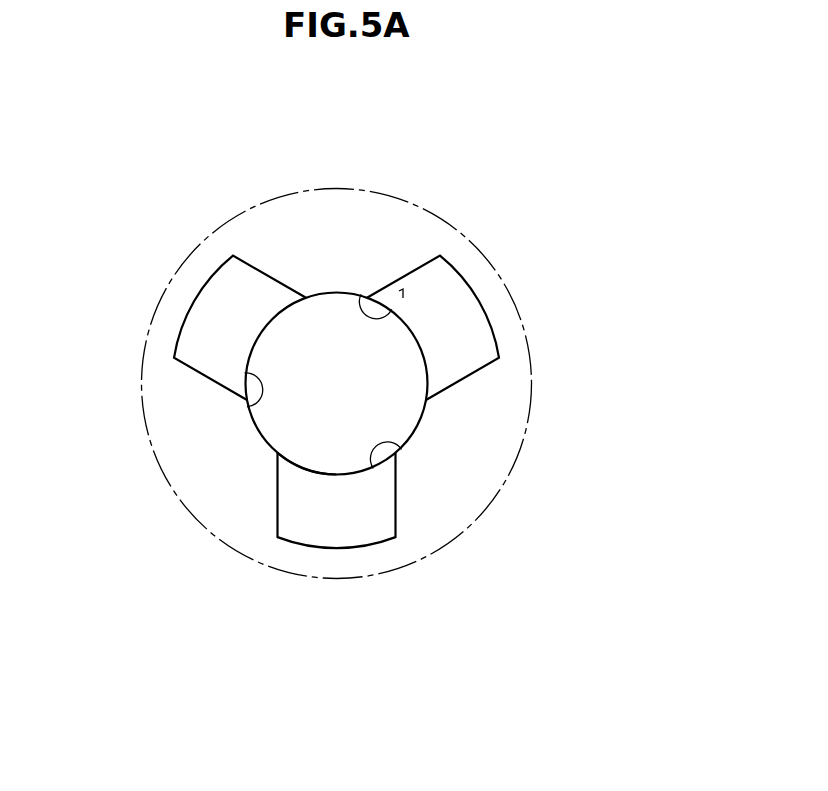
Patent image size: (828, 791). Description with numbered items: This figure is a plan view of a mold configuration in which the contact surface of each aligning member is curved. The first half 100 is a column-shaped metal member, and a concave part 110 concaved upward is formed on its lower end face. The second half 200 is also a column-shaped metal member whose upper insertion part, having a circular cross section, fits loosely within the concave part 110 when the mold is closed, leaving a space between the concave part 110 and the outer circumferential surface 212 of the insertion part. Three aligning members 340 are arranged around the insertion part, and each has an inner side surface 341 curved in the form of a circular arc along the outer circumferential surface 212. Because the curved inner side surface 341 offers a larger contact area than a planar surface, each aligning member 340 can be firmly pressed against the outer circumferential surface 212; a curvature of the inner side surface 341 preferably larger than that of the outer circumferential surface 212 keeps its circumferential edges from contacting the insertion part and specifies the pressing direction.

The first half 100 is at (216, 193).
The concave part 110 is at (428, 242).
The second half 200 is at (428, 406).
The outer circumferential surface 212 is at (275, 445).
The aligning member 340 is at (230, 315).
The inner side surface 341 is at (352, 302).